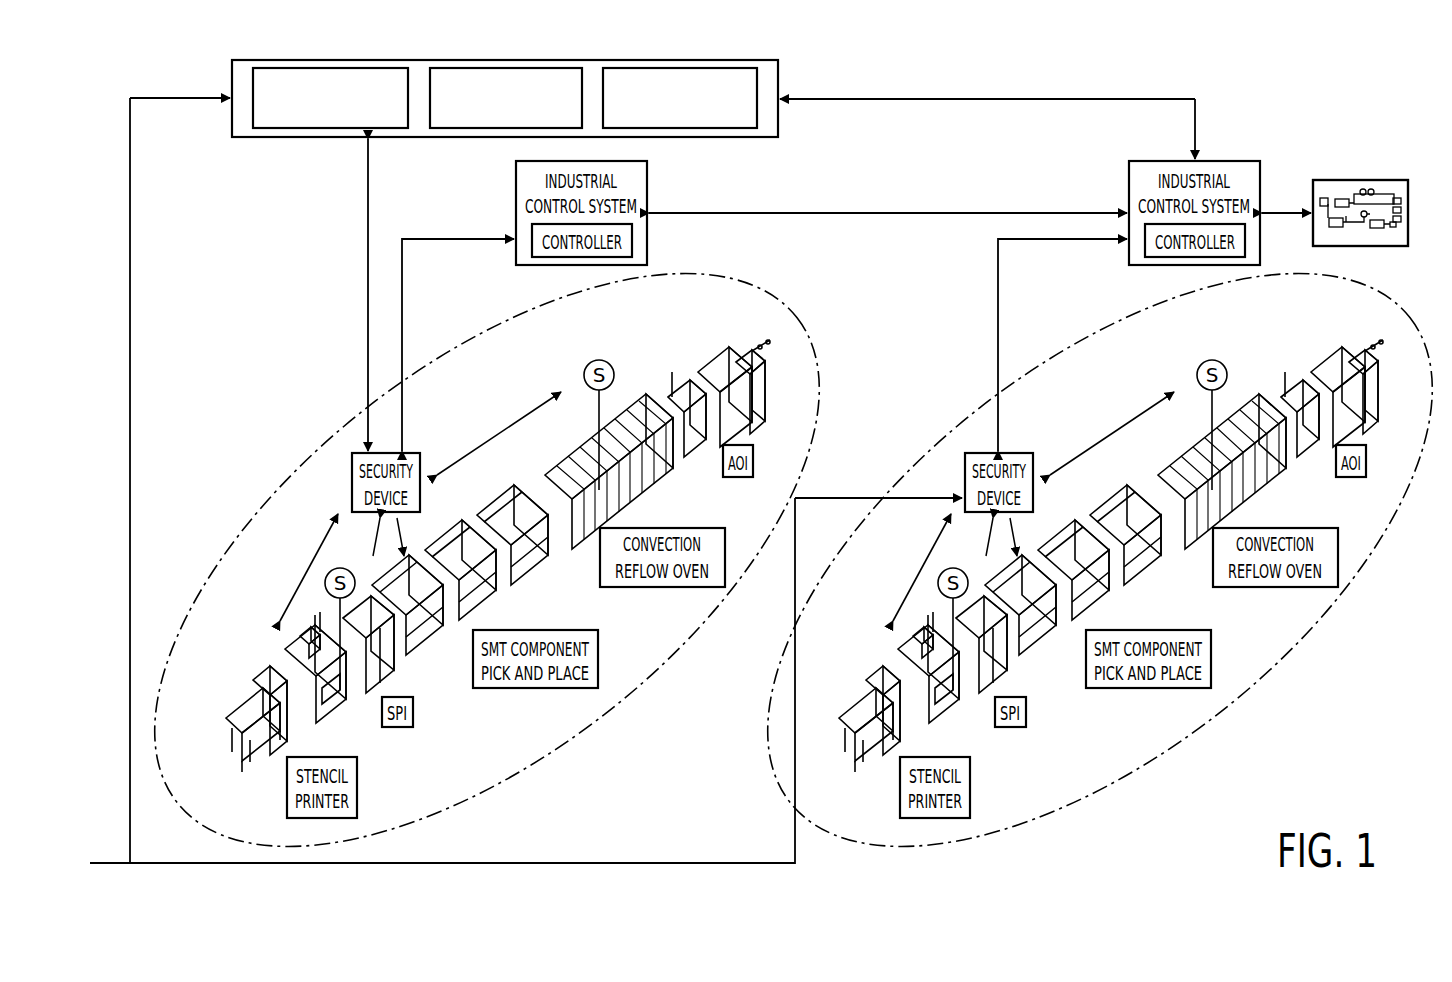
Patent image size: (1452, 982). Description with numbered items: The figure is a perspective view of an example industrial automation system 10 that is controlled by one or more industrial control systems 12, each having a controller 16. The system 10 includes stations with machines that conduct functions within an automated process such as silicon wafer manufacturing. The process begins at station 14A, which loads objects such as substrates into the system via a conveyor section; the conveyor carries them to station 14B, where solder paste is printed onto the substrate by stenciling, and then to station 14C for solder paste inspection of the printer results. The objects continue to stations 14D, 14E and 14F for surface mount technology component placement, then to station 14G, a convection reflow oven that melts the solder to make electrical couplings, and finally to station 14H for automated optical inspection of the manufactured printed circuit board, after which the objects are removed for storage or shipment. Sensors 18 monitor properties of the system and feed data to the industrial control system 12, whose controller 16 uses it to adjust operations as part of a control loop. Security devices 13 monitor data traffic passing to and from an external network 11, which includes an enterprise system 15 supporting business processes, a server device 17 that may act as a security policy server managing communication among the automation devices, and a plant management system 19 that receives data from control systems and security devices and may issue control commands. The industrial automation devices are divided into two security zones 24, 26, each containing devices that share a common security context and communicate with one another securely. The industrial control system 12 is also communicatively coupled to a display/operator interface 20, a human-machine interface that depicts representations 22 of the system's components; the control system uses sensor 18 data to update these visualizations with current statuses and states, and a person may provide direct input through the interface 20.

The industrial automation system 10 is at (212, 326).
The external network 11 is at (778, 80).
The industrial control system 12 is at (647, 190).
The security device 13 is at (352, 480).
The station 14A is at (262, 680).
The station 14B is at (295, 640).
The station 14C is at (385, 672).
The station 14D is at (376, 585).
The station 14E is at (440, 544).
The station 14F is at (494, 510).
The station 14G is at (588, 466).
The station 14H is at (692, 374).
The enterprise system 15 is at (253, 112).
The controller 16 is at (632, 246).
The server device 17 is at (430, 118).
The sensor 18 is at (584, 366).
The plant management system 19 is at (757, 116).
The display/operator interface 20 is at (1408, 216).
The representations 22 is at (1384, 190).
The security zone 24 is at (282, 483).
The security zone 26 is at (912, 476).